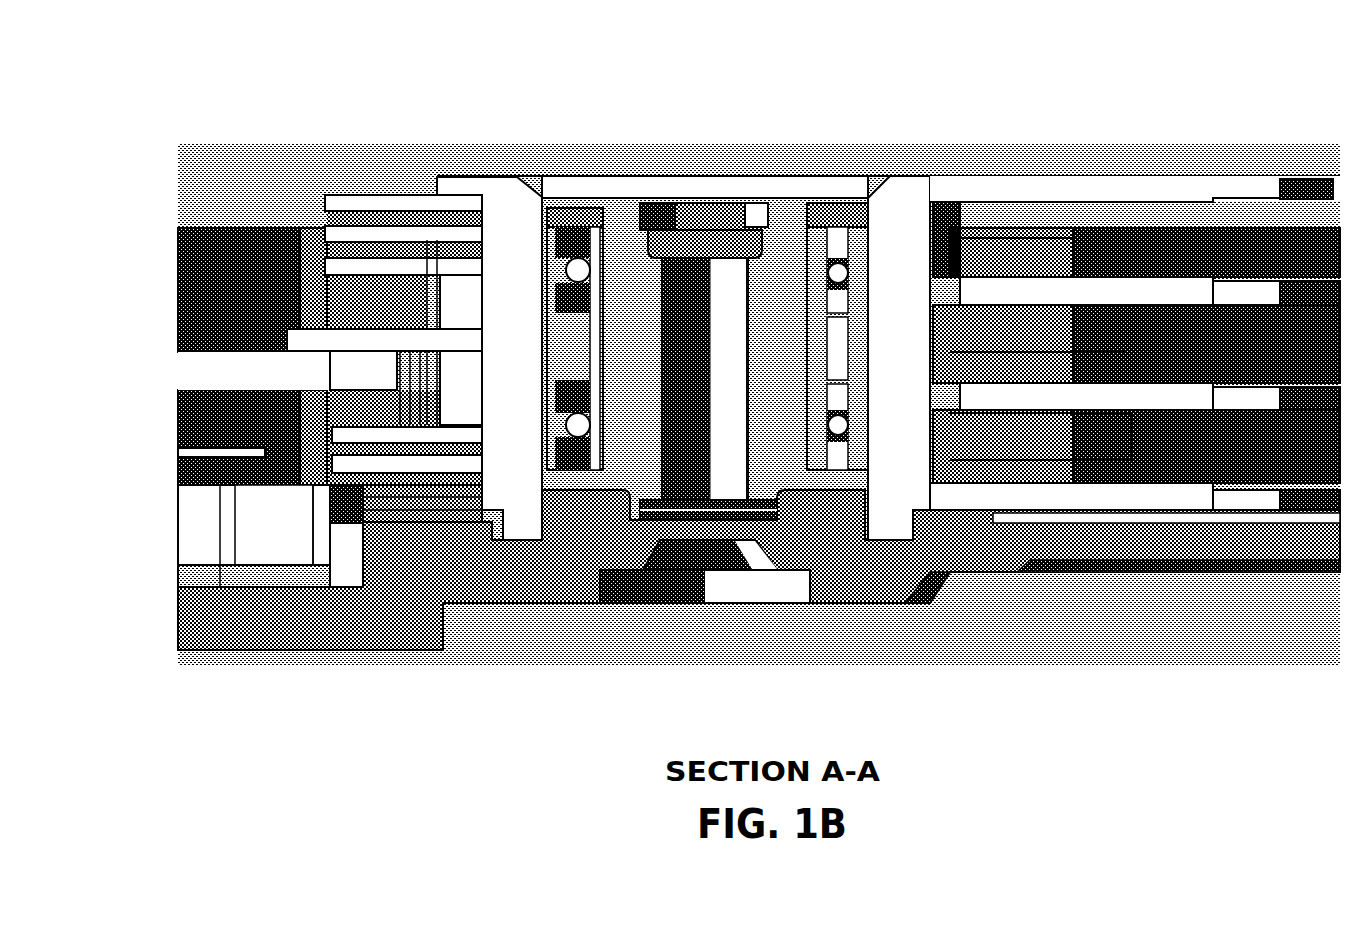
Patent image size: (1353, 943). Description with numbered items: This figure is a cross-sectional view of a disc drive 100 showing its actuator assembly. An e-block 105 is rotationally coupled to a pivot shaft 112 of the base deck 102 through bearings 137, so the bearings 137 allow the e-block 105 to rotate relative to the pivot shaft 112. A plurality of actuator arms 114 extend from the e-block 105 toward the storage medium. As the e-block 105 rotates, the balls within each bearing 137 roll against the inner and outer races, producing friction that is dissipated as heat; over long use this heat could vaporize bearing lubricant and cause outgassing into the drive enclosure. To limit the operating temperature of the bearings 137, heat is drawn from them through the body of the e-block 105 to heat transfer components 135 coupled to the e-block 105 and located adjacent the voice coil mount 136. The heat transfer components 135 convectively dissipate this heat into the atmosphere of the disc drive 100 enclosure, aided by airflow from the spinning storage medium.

The disc drive 100 is at (1192, 63).
The base deck 102 is at (1102, 547).
The e-block 105 is at (910, 225).
The pivot shaft 112 is at (697, 305).
The actuator arms 114 is at (1117, 293).
The heat transfer components 135 is at (408, 252).
The voice coil mount 136 is at (327, 337).
The bearings 137 is at (577, 255).